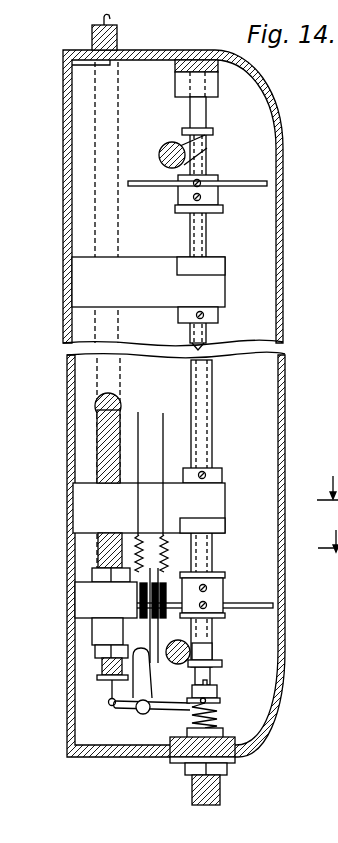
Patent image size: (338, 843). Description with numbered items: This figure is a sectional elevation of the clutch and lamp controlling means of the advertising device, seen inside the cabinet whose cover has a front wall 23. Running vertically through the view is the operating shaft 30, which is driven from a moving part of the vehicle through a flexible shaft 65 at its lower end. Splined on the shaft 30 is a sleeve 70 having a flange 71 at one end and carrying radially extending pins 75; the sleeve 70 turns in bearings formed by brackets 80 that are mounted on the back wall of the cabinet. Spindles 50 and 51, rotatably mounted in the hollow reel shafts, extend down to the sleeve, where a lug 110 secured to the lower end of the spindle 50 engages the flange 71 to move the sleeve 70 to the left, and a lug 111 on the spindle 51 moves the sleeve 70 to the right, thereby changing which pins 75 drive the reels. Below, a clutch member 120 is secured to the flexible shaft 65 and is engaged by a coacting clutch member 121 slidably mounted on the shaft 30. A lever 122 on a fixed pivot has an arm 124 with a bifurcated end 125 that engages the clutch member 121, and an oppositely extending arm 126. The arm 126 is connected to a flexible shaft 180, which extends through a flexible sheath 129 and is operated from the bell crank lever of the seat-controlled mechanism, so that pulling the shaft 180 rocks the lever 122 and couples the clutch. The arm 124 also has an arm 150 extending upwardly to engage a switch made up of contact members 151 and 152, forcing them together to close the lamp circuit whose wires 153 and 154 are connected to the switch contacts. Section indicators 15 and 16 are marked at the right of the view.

The section line 15 is at (324, 488).
The section line 16 is at (324, 541).
The front wall 23 is at (283, 425).
The operating shaft 30 is at (195, 110).
The spindle 50 is at (180, 641).
The spindle 51 is at (166, 145).
The flexible shaft 65 is at (222, 784).
The sleeve 70 is at (221, 543).
The flange 71 is at (219, 660).
The radially extending pins 75 is at (246, 187).
The brackets 80 is at (163, 258).
The lug 110 is at (210, 641).
The lug 111 is at (186, 163).
The clutch member 120 is at (223, 726).
The coacting clutch member 121 is at (220, 713).
The lever 122 is at (149, 700).
The arm 124 is at (165, 710).
The bifurcated end 125 is at (220, 697).
The arm 126 is at (120, 707).
The flexible sheath 129 is at (97, 455).
The arm 150 is at (138, 683).
The contact member 151 is at (140, 583).
The contact member 152 is at (160, 572).
The wire 153 is at (177, 404).
The wire 154 is at (147, 397).
The flexible shaft 180 is at (108, 693).